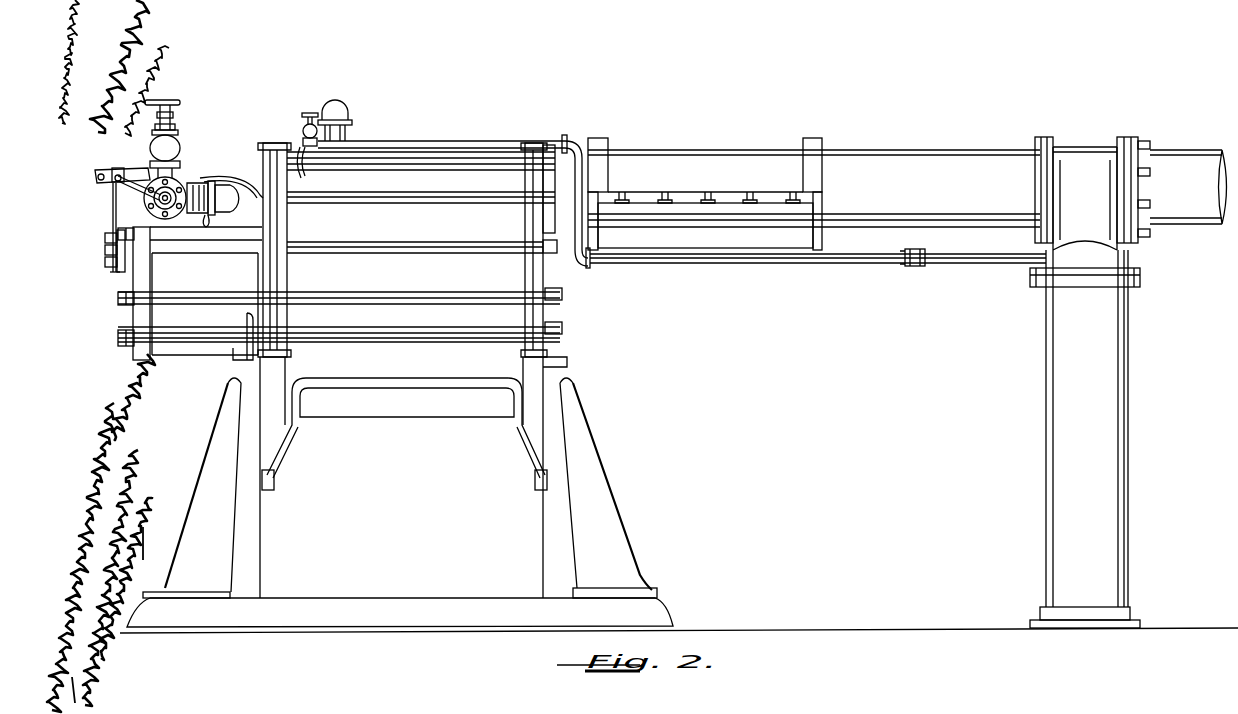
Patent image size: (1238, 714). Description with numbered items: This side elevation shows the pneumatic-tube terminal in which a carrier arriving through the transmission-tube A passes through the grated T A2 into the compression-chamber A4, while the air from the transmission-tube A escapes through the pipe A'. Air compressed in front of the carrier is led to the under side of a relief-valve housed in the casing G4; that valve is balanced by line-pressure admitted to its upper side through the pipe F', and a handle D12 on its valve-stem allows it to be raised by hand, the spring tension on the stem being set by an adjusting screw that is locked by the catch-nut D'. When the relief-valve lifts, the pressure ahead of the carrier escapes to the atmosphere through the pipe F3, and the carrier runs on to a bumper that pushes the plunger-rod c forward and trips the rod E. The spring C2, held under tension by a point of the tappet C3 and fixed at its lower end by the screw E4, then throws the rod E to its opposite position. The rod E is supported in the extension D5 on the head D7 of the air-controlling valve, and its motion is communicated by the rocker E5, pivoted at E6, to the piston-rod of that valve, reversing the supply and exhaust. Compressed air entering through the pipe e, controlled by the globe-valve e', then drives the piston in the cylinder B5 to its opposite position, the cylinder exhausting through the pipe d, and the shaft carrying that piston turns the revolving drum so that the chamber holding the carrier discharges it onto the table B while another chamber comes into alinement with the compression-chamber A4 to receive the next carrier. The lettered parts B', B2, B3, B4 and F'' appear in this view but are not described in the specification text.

The transmission-tube A is at (1188, 177).
The pipe A' is at (1085, 439).
The grated T A2 is at (1092, 185).
The compression-chamber A4 is at (814, 187).
The table B is at (342, 370).
The right leg B' is at (608, 488).
The left leg B2 is at (192, 488).
The base B3 is at (400, 612).
The floor B4 is at (679, 620).
The cylinder B5 is at (190, 293).
The plunger-rod c is at (240, 180).
The spring C2 is at (112, 202).
The tappet C3 is at (112, 268).
The pipe d is at (233, 186).
The catch-nut D' is at (293, 129).
The extension D5 is at (120, 168).
The head D7 is at (172, 189).
The handle D12 is at (298, 128).
The pipe e is at (175, 149).
The globe-valve e' is at (169, 102).
The rod E is at (110, 174).
The screw E4 is at (104, 246).
The rocker E5 is at (96, 178).
The pivot E6 is at (137, 190).
The pipe F' is at (454, 192).
The lower pipe F'' is at (818, 265).
The pipe F3 is at (344, 134).
The casing G4 is at (307, 170).